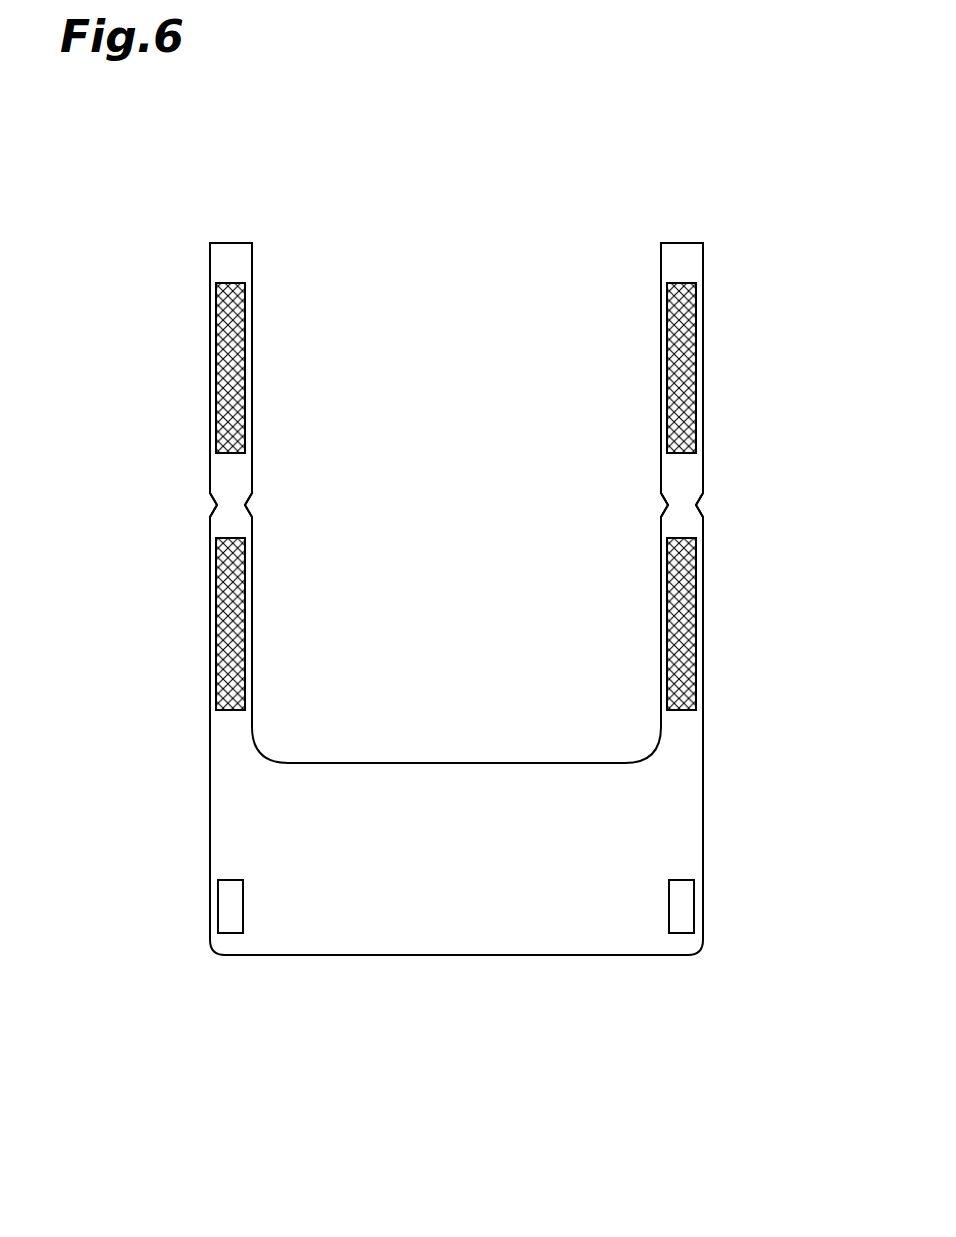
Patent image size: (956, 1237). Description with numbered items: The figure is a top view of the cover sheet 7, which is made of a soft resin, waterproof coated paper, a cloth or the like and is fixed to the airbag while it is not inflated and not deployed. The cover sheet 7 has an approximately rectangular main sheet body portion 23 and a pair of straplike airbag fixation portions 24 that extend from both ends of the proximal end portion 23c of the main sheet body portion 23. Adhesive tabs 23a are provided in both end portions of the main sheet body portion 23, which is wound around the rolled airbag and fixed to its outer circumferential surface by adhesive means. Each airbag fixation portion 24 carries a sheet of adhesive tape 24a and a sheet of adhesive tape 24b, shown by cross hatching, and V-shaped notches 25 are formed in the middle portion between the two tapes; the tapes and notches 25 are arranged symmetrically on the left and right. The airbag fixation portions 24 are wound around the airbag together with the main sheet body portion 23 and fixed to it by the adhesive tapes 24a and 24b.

The cover sheet 7 is at (707, 143).
The main sheet body portion 23 is at (414, 920).
The adhesive tab 23a is at (218, 905).
The proximal end portion 23c is at (456, 762).
The airbag fixation portion 24 is at (210, 241).
The adhesive tape 24a is at (216, 321).
The adhesive tape 24b is at (216, 592).
The V-shaped notch 25 is at (210, 495).